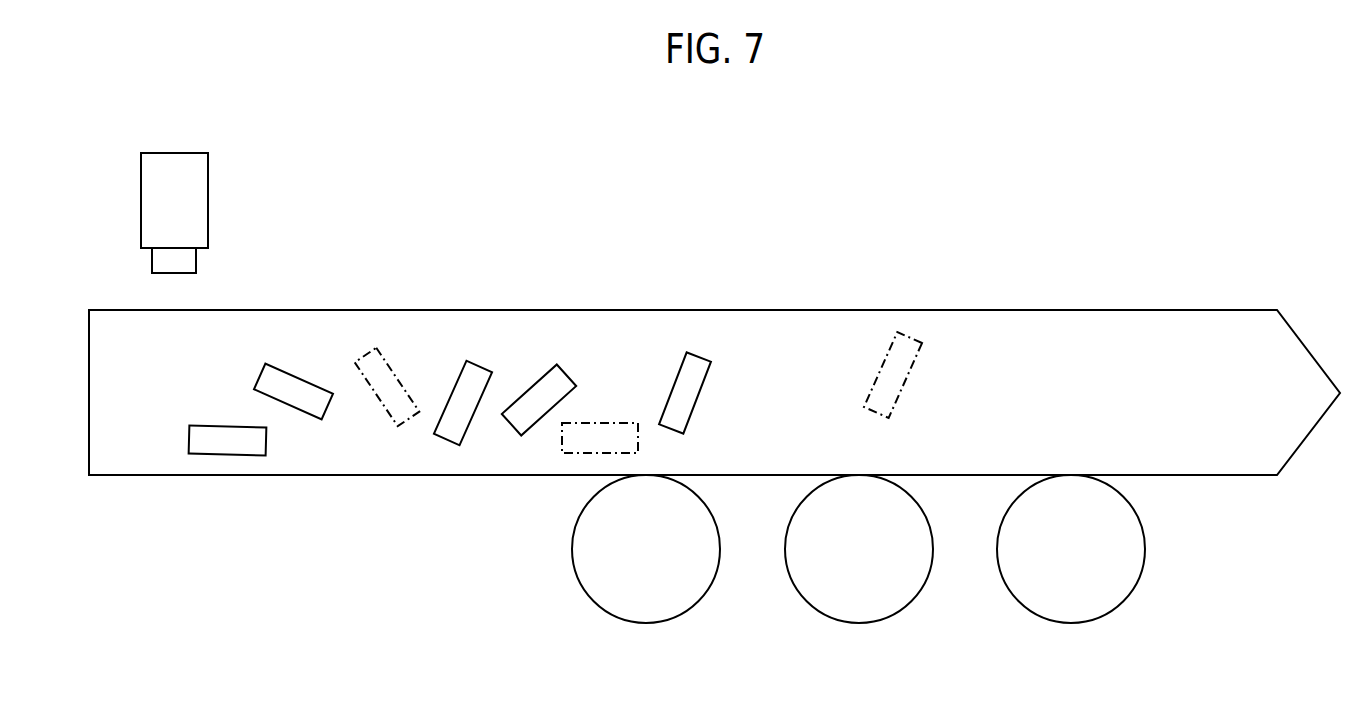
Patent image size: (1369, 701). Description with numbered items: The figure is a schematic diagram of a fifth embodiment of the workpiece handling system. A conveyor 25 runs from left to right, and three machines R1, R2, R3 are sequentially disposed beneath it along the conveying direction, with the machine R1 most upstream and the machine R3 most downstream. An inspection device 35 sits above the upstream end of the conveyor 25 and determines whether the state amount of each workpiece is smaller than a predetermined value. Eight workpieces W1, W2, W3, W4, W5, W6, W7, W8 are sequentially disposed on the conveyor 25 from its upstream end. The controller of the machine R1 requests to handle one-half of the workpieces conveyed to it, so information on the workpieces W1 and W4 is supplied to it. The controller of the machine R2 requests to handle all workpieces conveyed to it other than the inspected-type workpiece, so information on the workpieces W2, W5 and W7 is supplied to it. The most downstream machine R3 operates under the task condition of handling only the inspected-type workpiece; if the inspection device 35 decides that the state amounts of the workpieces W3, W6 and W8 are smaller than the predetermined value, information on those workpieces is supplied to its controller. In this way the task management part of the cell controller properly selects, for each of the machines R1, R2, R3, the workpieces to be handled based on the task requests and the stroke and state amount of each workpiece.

The conveyor 25 is at (1202, 308).
The inspection device 35 is at (208, 190).
The machine R1 is at (646, 549).
The machine R2 is at (859, 549).
The most downstream machine R3 is at (1071, 549).
The workpiece W1 is at (226, 427).
The workpiece W2 is at (298, 380).
The workpiece W3 is at (400, 377).
The workpiece W4 is at (482, 368).
The workpiece W5 is at (570, 373).
The workpiece W6 is at (600, 423).
The workpiece W7 is at (698, 353).
The workpiece W8 is at (912, 335).